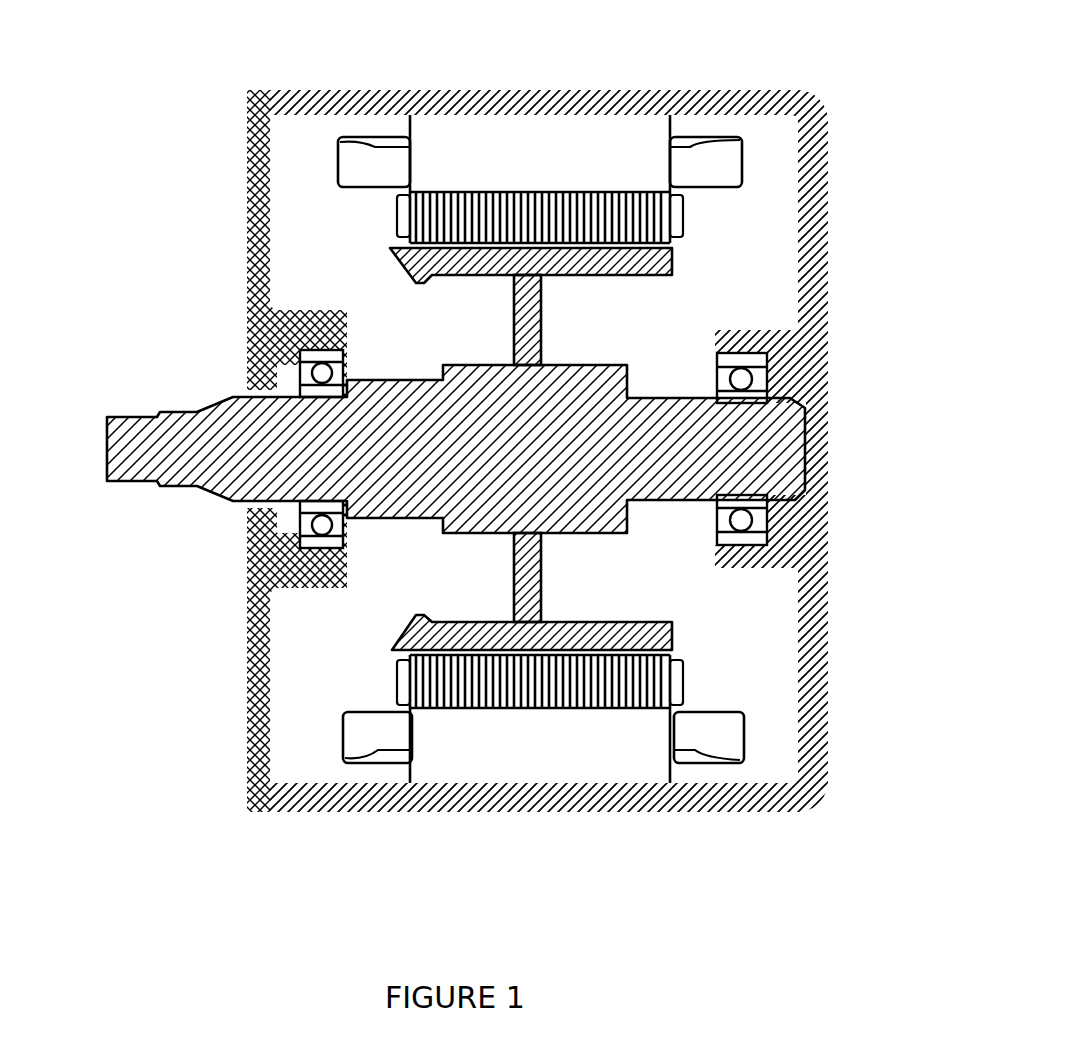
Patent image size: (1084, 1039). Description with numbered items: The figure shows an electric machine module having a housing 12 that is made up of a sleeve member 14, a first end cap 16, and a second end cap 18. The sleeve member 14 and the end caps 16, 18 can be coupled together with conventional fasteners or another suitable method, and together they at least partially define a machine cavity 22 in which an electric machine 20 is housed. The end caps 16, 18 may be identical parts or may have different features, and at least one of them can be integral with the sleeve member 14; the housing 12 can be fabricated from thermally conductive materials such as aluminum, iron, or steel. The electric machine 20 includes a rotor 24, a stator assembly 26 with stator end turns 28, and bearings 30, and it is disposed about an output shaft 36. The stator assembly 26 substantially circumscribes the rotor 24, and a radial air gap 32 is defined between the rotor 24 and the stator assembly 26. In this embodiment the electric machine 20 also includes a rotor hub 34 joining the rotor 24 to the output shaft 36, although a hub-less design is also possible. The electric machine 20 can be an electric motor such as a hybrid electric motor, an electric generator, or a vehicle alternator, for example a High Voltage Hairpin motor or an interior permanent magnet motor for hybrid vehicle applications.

The housing 12 is at (282, 90).
The sleeve member 14 is at (430, 90).
The first end cap 16 is at (247, 98).
The second end cap 18 is at (822, 106).
The electric machine 20 is at (644, 416).
The machine cavity 22 is at (521, 413).
The rotor 24 is at (420, 213).
The stator assembly 26 is at (552, 147).
The stator end turns 28 is at (360, 160).
The bearings 30 is at (303, 360).
The radial air gap 32 is at (413, 707).
The rotor hub 34 is at (535, 568).
The output shaft 36 is at (125, 417).